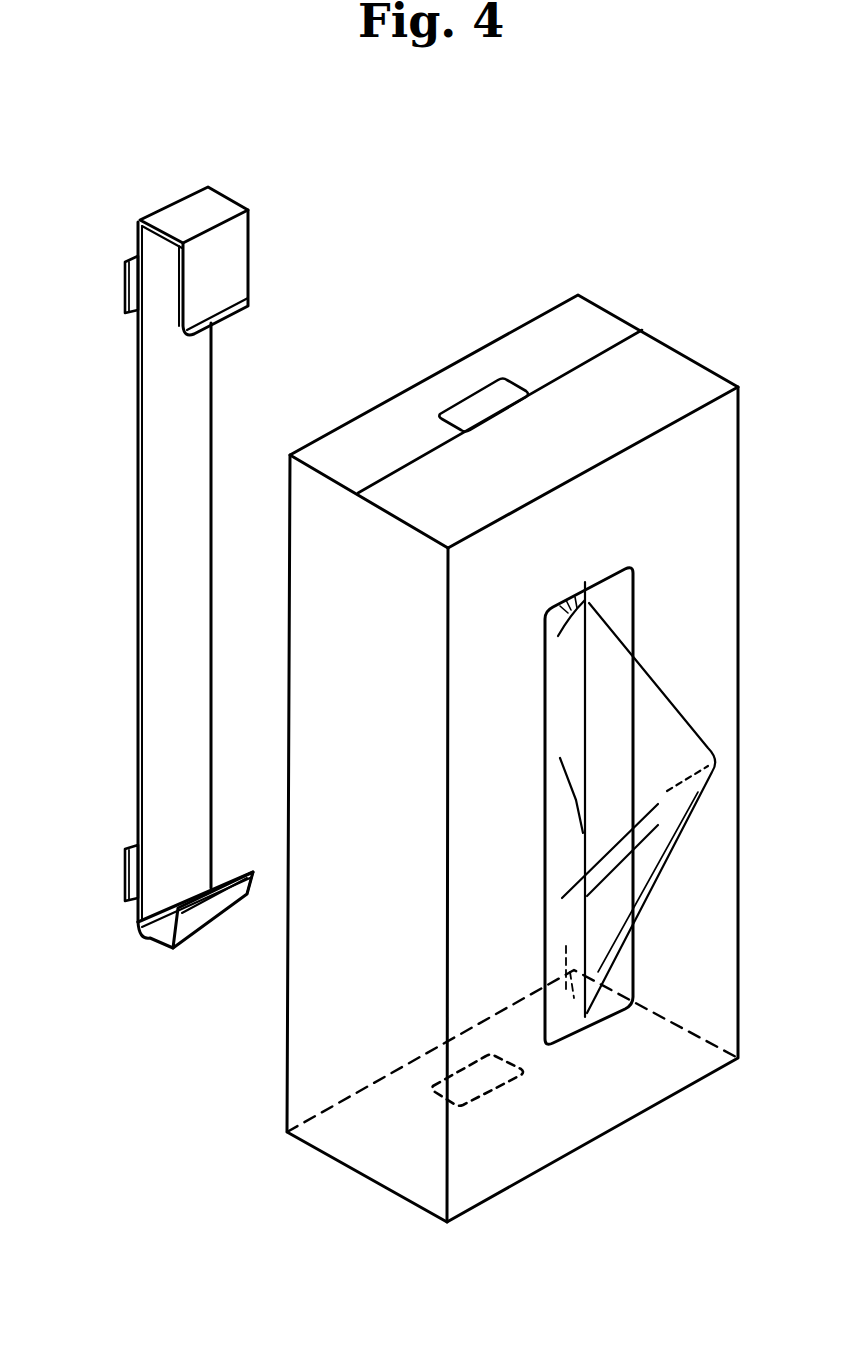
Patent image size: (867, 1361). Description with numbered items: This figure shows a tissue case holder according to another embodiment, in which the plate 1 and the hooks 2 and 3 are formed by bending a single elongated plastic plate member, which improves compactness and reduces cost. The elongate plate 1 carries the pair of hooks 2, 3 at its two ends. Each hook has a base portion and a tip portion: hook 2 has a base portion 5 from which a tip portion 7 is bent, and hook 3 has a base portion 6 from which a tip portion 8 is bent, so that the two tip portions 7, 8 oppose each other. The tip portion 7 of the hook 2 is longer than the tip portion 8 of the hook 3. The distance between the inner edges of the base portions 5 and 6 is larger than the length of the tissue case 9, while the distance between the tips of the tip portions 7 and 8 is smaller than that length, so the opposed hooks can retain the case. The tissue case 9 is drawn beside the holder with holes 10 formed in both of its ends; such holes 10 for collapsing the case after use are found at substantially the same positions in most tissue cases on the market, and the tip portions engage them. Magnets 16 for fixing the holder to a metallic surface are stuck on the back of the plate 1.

The plate 1 is at (170, 523).
The hook 2 is at (232, 276).
The hook 3 is at (208, 914).
The base portion 5 is at (188, 207).
The base portion 6 is at (158, 942).
The tip portion 7 is at (217, 296).
The tip portion 8 is at (250, 888).
The tissue case 9 is at (352, 1052).
The holes 10 is at (490, 393).
The magnets 16 is at (128, 278).